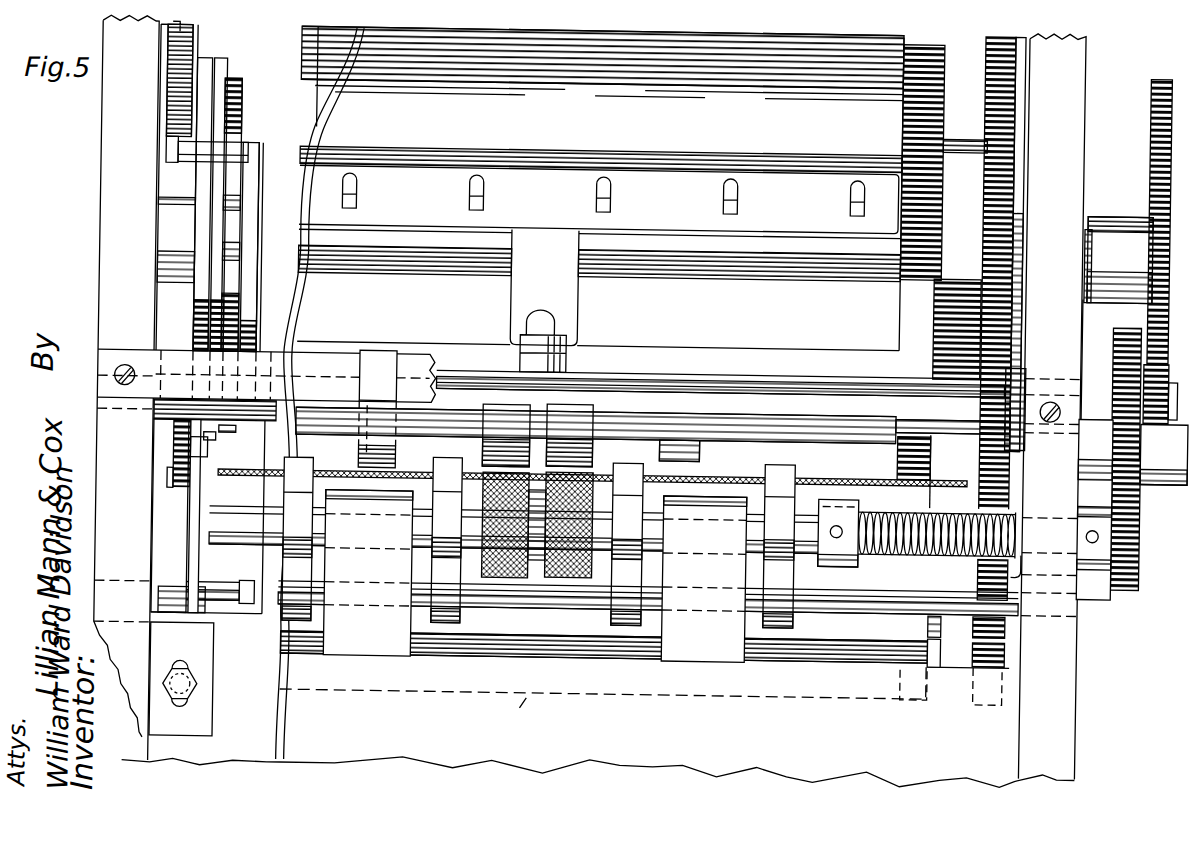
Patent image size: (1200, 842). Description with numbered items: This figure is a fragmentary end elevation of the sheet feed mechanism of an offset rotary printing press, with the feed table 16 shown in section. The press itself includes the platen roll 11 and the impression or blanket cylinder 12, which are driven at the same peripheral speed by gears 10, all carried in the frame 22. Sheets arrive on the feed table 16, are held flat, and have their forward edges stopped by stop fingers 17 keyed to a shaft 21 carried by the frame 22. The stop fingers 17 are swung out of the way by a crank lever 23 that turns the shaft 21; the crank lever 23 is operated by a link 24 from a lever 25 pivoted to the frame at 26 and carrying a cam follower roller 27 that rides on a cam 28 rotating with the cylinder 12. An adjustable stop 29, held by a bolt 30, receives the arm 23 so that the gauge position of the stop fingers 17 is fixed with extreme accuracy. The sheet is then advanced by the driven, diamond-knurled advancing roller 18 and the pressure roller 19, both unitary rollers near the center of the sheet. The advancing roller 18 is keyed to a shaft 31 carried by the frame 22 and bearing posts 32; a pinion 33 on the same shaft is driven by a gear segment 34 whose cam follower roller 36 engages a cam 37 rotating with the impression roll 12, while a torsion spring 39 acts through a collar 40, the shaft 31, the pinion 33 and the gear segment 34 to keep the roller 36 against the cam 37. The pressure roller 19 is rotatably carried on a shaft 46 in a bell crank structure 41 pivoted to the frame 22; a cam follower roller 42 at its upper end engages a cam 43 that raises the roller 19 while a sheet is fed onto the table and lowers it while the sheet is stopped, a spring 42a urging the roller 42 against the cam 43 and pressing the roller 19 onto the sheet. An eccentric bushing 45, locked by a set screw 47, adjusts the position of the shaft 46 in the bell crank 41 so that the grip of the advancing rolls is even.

The gears 10 is at (981, 78).
The platen roll 11 is at (527, 646).
The impression or blanket cylinder 12 is at (278, 37).
The feed table 16 is at (364, 448).
The stop fingers 17 is at (296, 465).
The advancing roller 18 is at (569, 581).
The pressure roller 19 is at (588, 438).
The shaft 21 is at (229, 589).
The frame 22 is at (102, 279).
The crank lever 23 is at (172, 592).
The link 24 is at (196, 529).
The lever 25 is at (186, 492).
The pivot 26 is at (206, 453).
The cam follower roller 27 is at (215, 441).
The cam 28 is at (192, 334).
The adjustable stop 29 is at (207, 664).
The bolt 30 is at (199, 699).
The shaft 31 is at (808, 517).
The bearing posts 32 is at (361, 644).
The pinion 33 is at (1138, 532).
The gear segment 34 is at (1131, 454).
The cam follower roller 36 is at (1152, 421).
The cam 37 is at (1146, 152).
The torsion spring 39 is at (893, 553).
The collar 40 is at (848, 563).
The bell crank structure 41 is at (454, 375).
The cam follower roller 42 is at (229, 233).
The spring 42a is at (162, 106).
The cam 43 is at (233, 84).
The eccentric bushing 45 is at (1026, 368).
The shaft 46 is at (812, 390).
The set screw 47 is at (1049, 395).